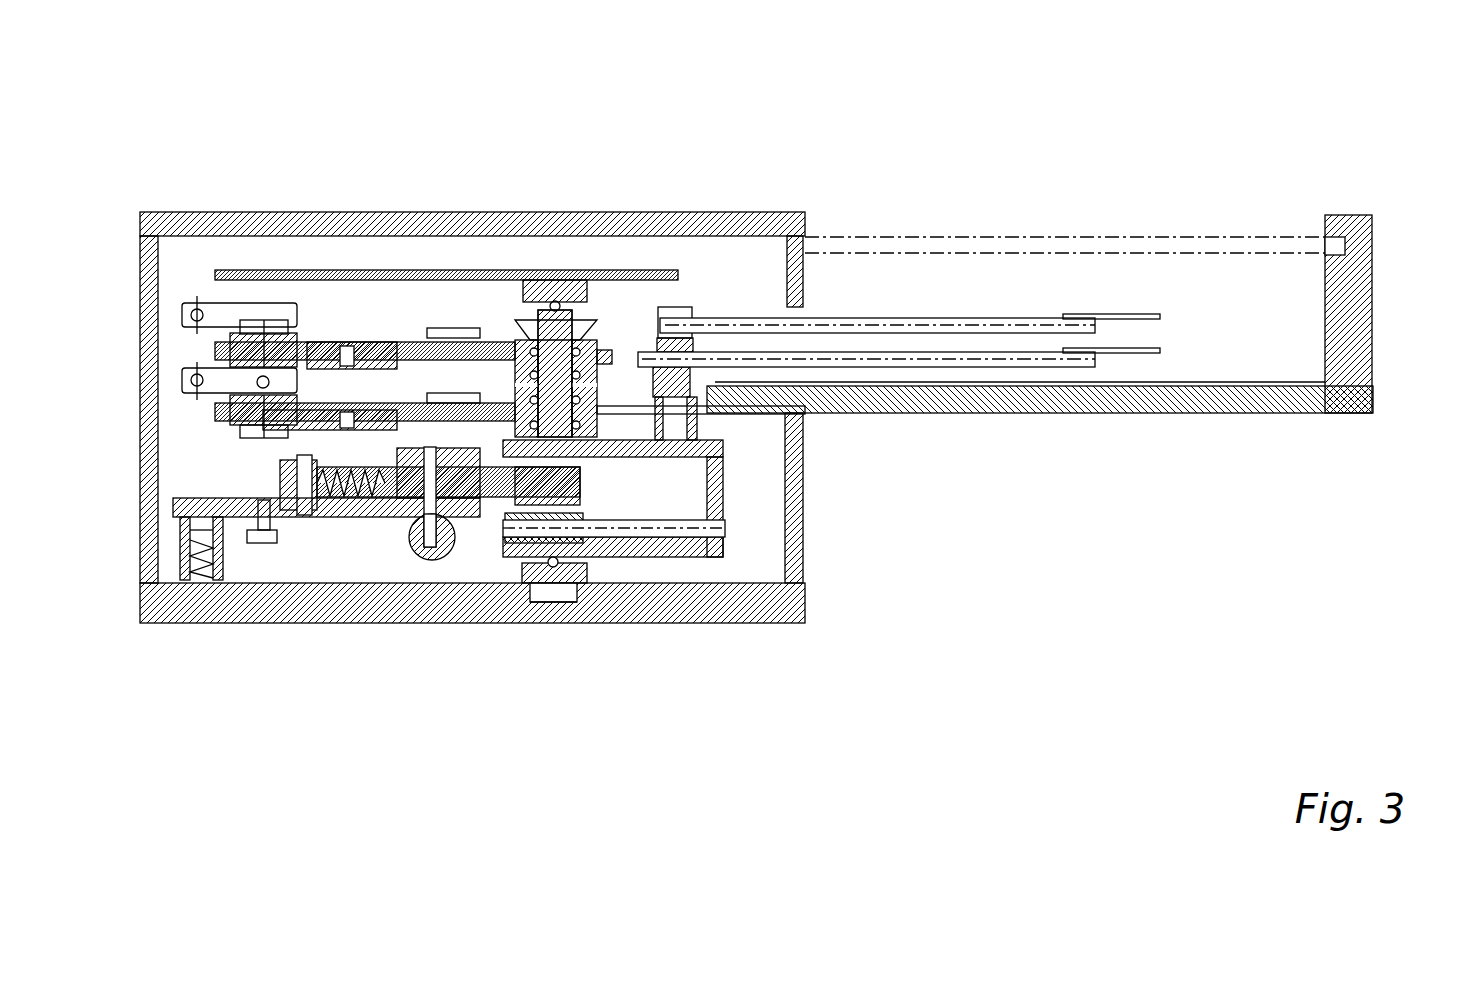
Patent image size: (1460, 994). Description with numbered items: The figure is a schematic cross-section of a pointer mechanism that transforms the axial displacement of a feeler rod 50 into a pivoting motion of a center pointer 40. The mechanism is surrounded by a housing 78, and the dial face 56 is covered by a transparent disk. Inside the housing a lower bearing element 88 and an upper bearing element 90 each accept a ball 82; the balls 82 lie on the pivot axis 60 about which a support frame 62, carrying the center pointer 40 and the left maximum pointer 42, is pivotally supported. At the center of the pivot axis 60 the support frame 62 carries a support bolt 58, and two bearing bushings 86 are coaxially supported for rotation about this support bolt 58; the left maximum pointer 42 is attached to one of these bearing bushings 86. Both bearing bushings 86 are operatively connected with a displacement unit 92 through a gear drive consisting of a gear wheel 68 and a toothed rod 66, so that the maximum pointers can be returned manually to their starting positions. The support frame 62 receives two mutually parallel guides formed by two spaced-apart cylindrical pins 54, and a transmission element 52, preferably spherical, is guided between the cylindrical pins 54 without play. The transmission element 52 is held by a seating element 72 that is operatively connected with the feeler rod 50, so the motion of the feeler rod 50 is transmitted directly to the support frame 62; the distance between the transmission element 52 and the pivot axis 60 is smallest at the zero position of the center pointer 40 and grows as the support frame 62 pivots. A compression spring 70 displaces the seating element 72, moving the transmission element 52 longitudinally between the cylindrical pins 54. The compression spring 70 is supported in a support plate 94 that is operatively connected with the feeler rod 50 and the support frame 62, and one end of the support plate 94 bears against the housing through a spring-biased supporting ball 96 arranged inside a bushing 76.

The center pointer 40 is at (1033, 357).
The left maximum pointer 42 is at (1020, 327).
The feeler rod 50 is at (450, 555).
The transmission element 52 is at (590, 557).
The cylindrical pin 54 is at (687, 557).
The dial face 56 is at (1277, 413).
The support bolt 58 is at (593, 343).
The pivot axis 60 is at (553, 630).
The support frame 62 is at (725, 478).
The toothed rod 66 is at (455, 312).
The gear wheel 68 is at (513, 332).
The compression spring 70 is at (345, 517).
The seating element 72 is at (637, 557).
The bushing 76 is at (153, 620).
The housing 78 is at (805, 623).
The ball 82 is at (535, 275).
The bearing bushing 86 is at (597, 347).
The lower bearing element 88 is at (555, 565).
The upper bearing element 90 is at (587, 270).
The displacement unit 92 is at (373, 332).
The support plate 94 is at (415, 517).
The supporting ball 96 is at (177, 557).